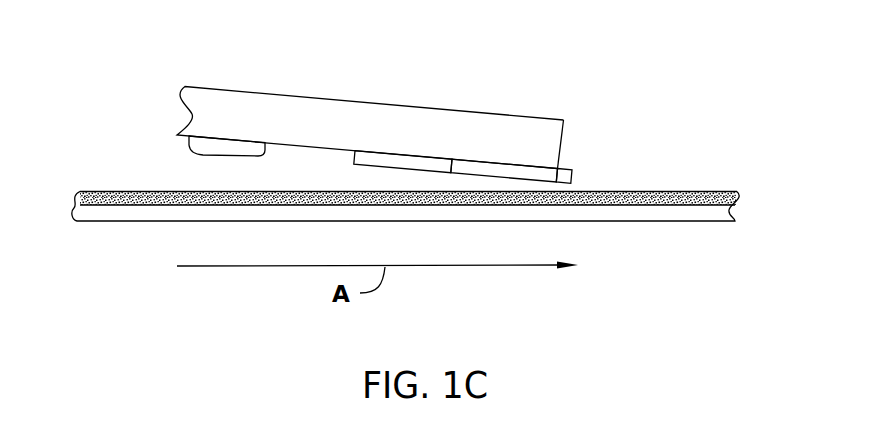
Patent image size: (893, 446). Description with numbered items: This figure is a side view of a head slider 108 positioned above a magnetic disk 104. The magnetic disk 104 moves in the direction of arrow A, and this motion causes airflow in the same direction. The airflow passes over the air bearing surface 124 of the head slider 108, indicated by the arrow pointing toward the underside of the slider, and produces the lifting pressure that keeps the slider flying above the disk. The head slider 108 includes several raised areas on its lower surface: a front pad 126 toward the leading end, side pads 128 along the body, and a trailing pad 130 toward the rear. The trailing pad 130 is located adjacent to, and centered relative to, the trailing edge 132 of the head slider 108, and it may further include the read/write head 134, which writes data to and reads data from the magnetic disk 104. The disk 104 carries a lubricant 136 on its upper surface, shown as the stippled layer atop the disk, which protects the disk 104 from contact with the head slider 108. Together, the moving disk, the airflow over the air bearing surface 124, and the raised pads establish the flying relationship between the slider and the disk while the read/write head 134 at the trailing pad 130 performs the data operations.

The magnetic disk 104 is at (158, 213).
The head slider 108 is at (292, 108).
The air bearing surface 124 is at (190, 173).
The front pad 126 is at (203, 142).
The side pads 128 is at (370, 163).
The trailing pad 130 is at (497, 173).
The trailing edge 132 is at (582, 117).
The read/write head 134 is at (572, 171).
The lubricant 136 is at (688, 203).